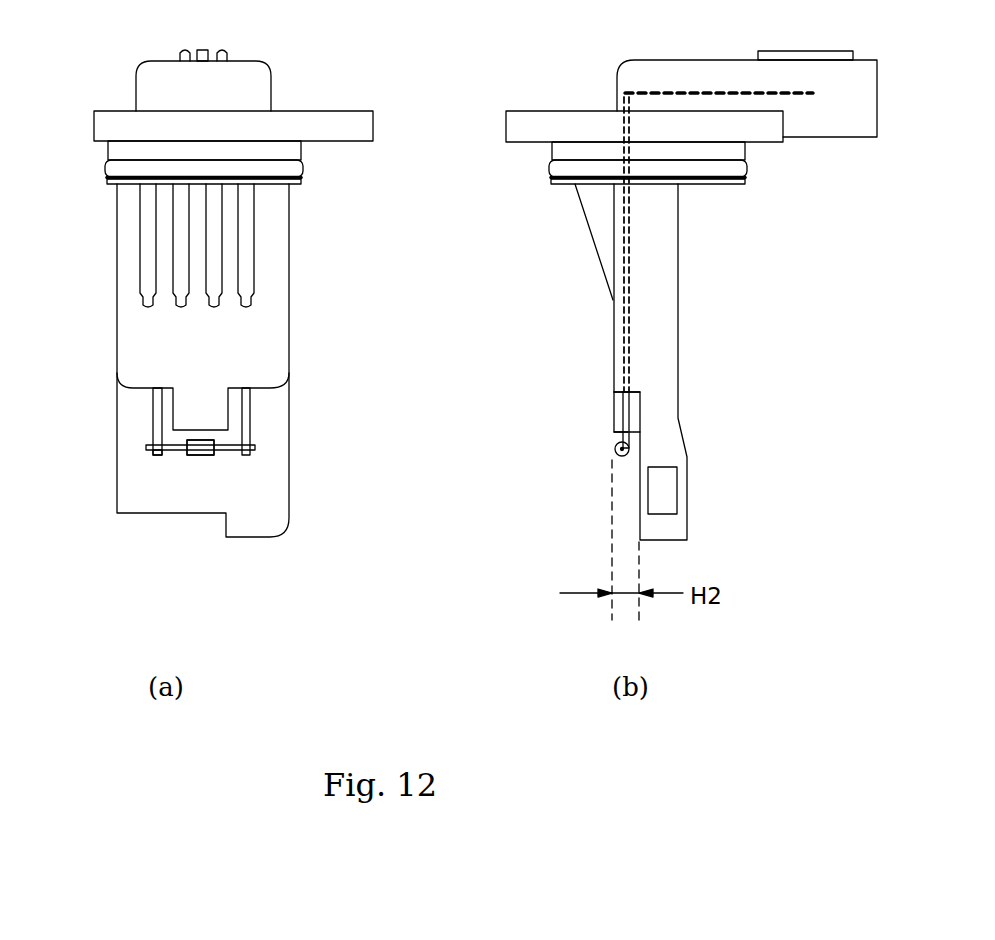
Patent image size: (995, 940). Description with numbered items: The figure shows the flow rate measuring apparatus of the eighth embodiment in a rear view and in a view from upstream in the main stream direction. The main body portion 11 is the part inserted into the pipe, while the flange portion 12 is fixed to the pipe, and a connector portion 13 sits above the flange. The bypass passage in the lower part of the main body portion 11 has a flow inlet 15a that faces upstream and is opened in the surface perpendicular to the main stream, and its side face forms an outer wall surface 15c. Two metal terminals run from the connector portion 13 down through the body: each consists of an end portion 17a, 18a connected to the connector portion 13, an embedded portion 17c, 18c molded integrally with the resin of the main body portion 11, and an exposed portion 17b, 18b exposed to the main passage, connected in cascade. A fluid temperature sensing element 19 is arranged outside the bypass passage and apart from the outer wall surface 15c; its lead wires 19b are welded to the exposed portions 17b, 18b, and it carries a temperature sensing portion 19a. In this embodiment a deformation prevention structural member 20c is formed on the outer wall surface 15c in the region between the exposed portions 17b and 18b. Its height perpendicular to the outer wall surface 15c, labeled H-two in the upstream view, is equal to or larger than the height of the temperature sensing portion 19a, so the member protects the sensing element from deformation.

The main body portion 11 is at (290, 320).
The flange portion 12 is at (342, 113).
The connector portion 13 is at (140, 98).
The flow inlet 15a is at (673, 497).
The outer wall surface 15c is at (142, 448).
The end portion 17a is at (733, 93).
The exposed portion 17b is at (157, 437).
The embedded portion 17c is at (622, 330).
The end portion 18a is at (719, 52).
The exposed portion 18b is at (247, 437).
The embedded portion 18c is at (552, 244).
The fluid temperature sensing element 19 is at (212, 453).
The temperature sensing portion 19a is at (206, 455).
The lead wires 19b is at (172, 455).
The deformation prevention structural member 20c is at (202, 405).